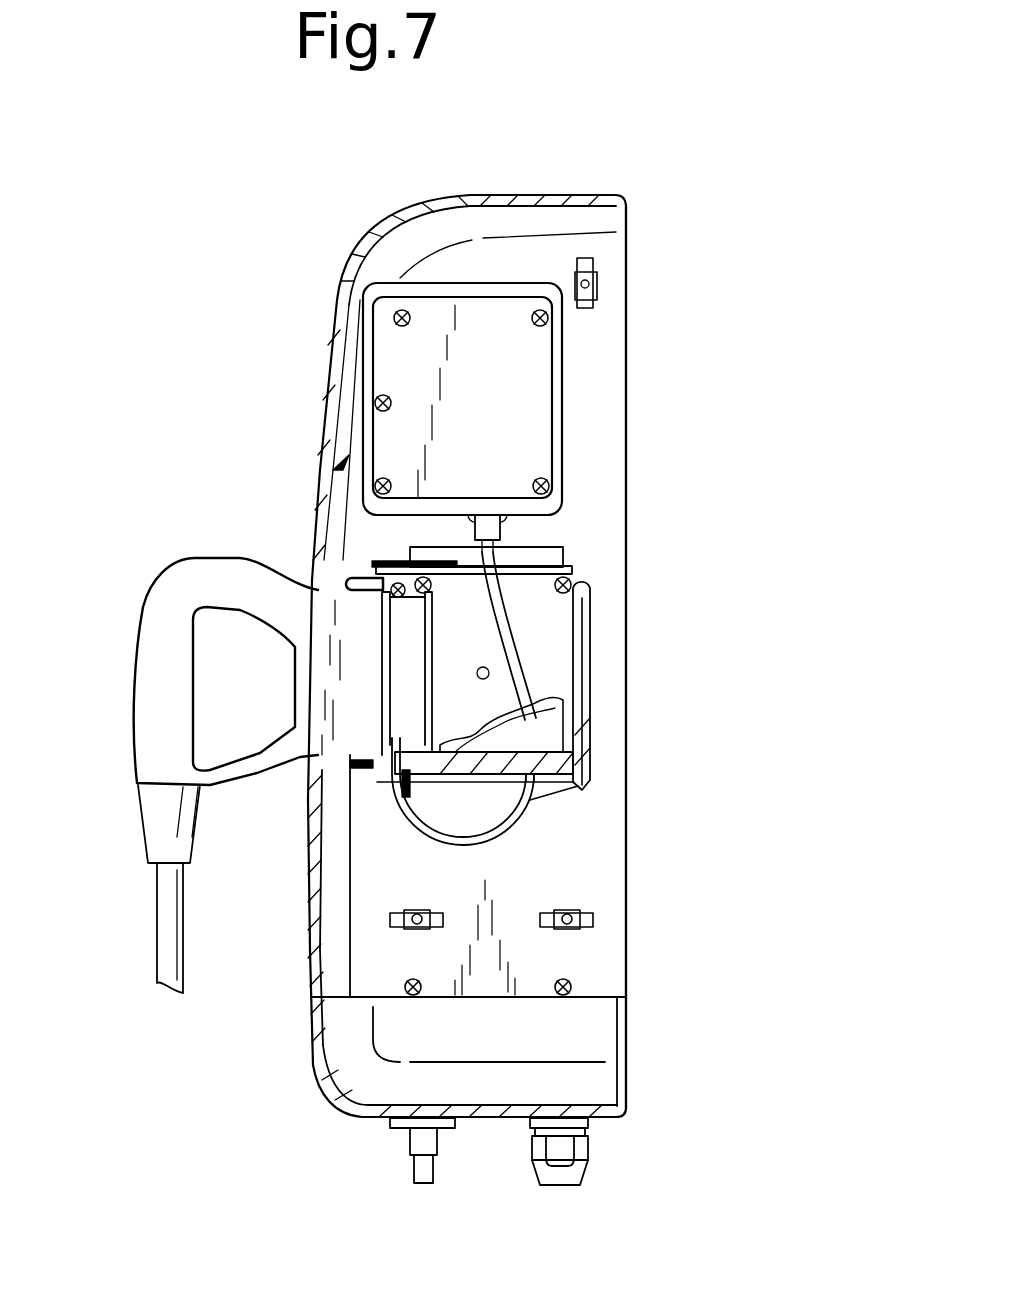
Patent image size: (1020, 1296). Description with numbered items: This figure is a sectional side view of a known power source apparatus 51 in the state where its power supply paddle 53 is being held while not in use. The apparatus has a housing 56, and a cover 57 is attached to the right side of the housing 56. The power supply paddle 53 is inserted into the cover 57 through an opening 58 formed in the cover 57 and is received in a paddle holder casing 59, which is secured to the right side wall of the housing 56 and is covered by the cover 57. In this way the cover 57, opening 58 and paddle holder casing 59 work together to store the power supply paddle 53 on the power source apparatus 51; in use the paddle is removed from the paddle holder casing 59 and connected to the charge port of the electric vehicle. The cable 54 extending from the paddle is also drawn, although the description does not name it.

The power source apparatus 51 is at (606, 164).
The power supply paddle 53 is at (155, 617).
The cable 54 is at (163, 943).
The housing 56 is at (628, 366).
The cover 57 is at (422, 220).
The opening 58 is at (310, 777).
The paddle holder casing 59 is at (550, 613).